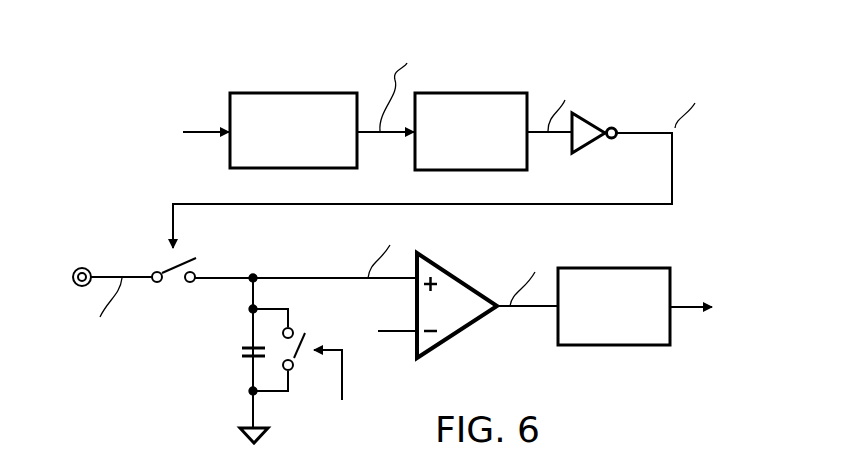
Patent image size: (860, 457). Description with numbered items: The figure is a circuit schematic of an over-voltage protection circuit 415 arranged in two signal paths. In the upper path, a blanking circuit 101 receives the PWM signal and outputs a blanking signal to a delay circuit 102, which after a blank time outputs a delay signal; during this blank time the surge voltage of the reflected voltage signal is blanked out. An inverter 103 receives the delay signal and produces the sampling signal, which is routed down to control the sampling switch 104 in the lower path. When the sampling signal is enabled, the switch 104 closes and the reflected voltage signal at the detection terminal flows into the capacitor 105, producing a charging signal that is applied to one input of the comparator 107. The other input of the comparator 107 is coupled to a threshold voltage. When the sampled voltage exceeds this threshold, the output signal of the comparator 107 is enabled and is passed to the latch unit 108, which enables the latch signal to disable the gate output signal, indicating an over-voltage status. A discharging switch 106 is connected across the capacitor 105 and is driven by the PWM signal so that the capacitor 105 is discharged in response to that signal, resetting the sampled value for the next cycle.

The over-voltage protection circuit 415 is at (766, 50).
The blanking circuit 101 is at (293, 117).
The delay circuit 102 is at (471, 118).
The inverter 103 is at (594, 146).
The switch 104 is at (174, 287).
The capacitor 105 is at (233, 350).
The discharging switch 106 is at (293, 352).
The comparator 107 is at (457, 304).
The latch unit 108 is at (614, 294).